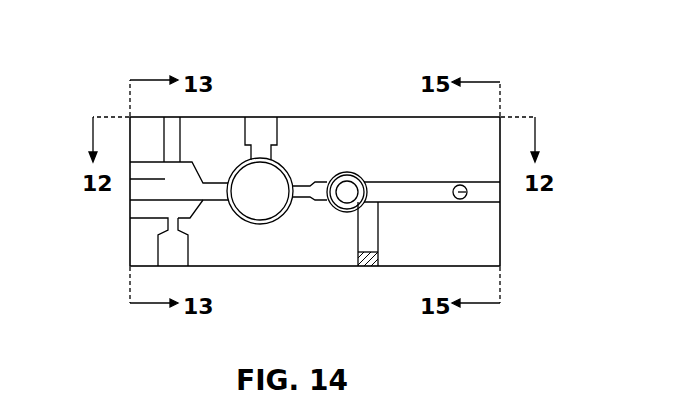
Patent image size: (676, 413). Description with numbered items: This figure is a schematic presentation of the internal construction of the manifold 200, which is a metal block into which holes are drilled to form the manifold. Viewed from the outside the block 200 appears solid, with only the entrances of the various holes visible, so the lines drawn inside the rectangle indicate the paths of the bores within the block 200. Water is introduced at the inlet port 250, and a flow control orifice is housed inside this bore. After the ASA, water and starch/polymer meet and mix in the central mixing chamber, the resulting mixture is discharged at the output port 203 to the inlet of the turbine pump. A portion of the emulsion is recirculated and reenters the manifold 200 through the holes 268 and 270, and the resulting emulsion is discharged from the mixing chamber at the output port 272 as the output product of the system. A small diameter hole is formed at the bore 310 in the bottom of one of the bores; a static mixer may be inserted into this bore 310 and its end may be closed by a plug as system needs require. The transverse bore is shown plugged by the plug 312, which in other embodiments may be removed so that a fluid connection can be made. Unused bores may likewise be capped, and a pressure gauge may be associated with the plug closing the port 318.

The manifold 200 is at (128, 40).
The port 318 is at (173, 122).
The hole 270 is at (262, 120).
The output port 272 is at (163, 175).
The output port 203 is at (243, 203).
The inlet port 250 is at (345, 173).
The hole 268 is at (182, 257).
The bore 310 is at (433, 195).
The plug 312 is at (466, 197).